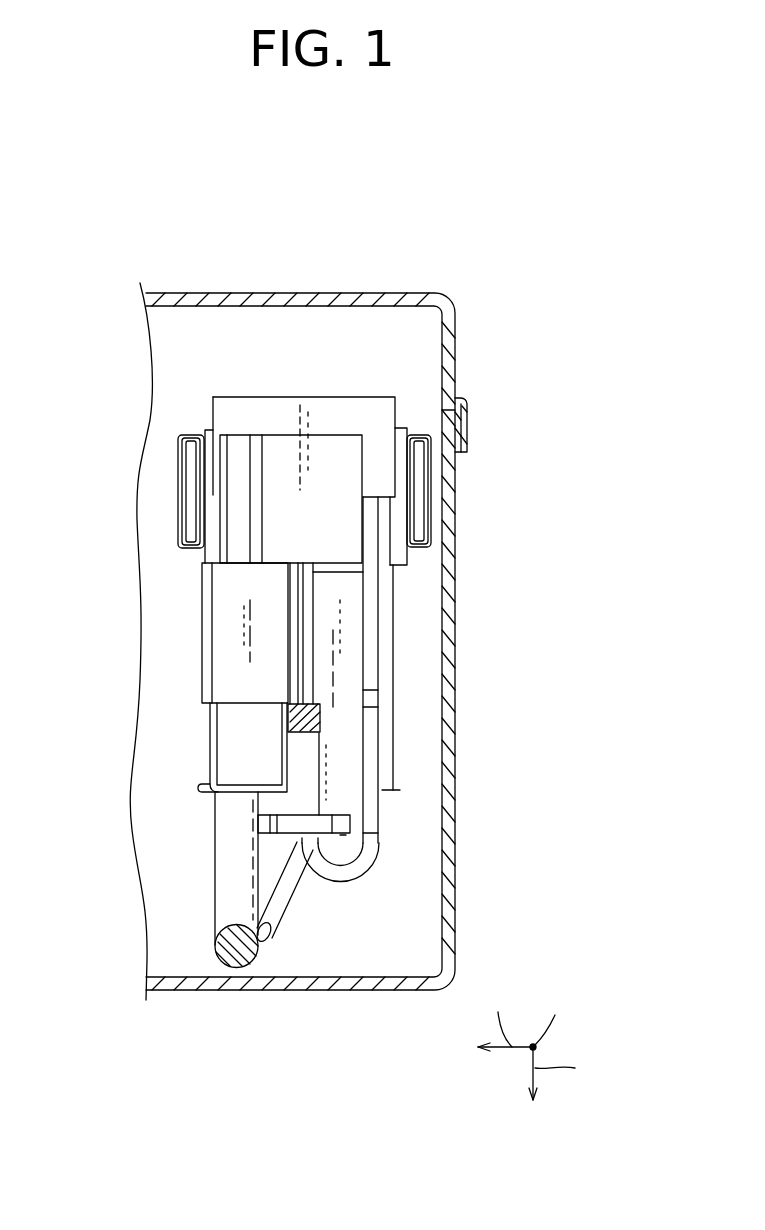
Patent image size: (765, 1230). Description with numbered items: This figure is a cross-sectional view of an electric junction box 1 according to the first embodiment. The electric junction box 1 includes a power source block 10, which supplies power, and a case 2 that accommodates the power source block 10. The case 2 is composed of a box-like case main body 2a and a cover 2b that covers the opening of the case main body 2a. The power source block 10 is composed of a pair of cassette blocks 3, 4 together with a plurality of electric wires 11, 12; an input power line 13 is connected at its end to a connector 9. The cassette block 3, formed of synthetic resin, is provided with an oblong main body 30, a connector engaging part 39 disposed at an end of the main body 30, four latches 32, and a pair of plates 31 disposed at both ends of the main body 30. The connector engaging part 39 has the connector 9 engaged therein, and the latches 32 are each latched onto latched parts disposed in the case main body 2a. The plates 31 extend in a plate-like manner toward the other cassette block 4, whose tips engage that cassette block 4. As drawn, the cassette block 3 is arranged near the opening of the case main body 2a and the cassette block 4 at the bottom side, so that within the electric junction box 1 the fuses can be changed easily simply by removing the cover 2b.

The electric junction box 1 is at (526, 198).
The case 2 is at (641, 340).
The case main body 2a is at (457, 465).
The cover 2b is at (457, 373).
The cassette block 3 is at (346, 397).
The cassette block 4 is at (343, 836).
The connector 9 is at (210, 740).
The power source block 10 is at (297, 357).
The electric wire 11 is at (370, 812).
The electric wire 12 is at (393, 720).
The input power line 13 is at (215, 868).
The main body 30 is at (213, 413).
The plate 31 is at (345, 680).
The latch 32 is at (180, 492).
The connector engaging part 39 is at (203, 626).